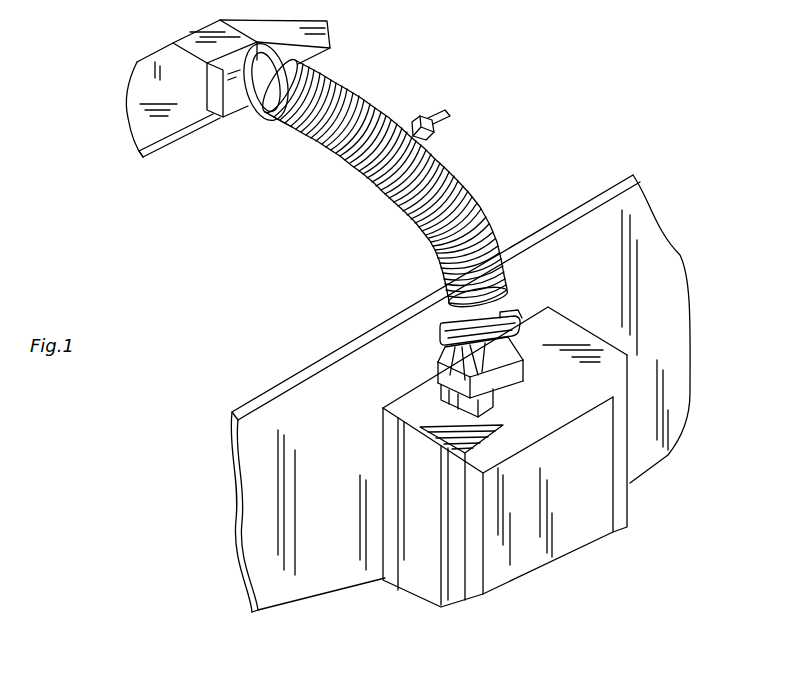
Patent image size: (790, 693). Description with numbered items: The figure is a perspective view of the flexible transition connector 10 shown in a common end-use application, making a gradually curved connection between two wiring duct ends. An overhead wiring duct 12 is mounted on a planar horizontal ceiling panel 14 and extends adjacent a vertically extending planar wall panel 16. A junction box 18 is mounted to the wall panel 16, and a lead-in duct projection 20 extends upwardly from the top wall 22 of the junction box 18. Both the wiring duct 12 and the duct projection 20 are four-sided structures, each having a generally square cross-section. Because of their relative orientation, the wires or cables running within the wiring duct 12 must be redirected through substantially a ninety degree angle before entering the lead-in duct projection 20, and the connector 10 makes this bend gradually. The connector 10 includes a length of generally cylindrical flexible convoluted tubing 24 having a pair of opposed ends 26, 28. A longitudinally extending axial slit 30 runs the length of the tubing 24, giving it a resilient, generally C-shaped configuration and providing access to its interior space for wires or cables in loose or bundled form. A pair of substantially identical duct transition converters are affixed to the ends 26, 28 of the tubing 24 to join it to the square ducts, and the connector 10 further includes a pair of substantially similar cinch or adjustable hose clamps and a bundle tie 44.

The flexible transition connector 10 is at (266, 228).
The overhead wiring duct 12 is at (292, 39).
The ceiling panel 14 is at (147, 127).
The wall panel 16 is at (262, 422).
The junction box 18 is at (410, 572).
The lead-in duct projection 20 is at (510, 393).
The top wall 22 is at (566, 377).
The flexible tubing 24 is at (479, 200).
The first end of flexible tubing 26 is at (320, 76).
The second end of flexible tubing 28 is at (511, 283).
The axial slit 30 is at (313, 133).
The bundle tie 44 is at (448, 117).